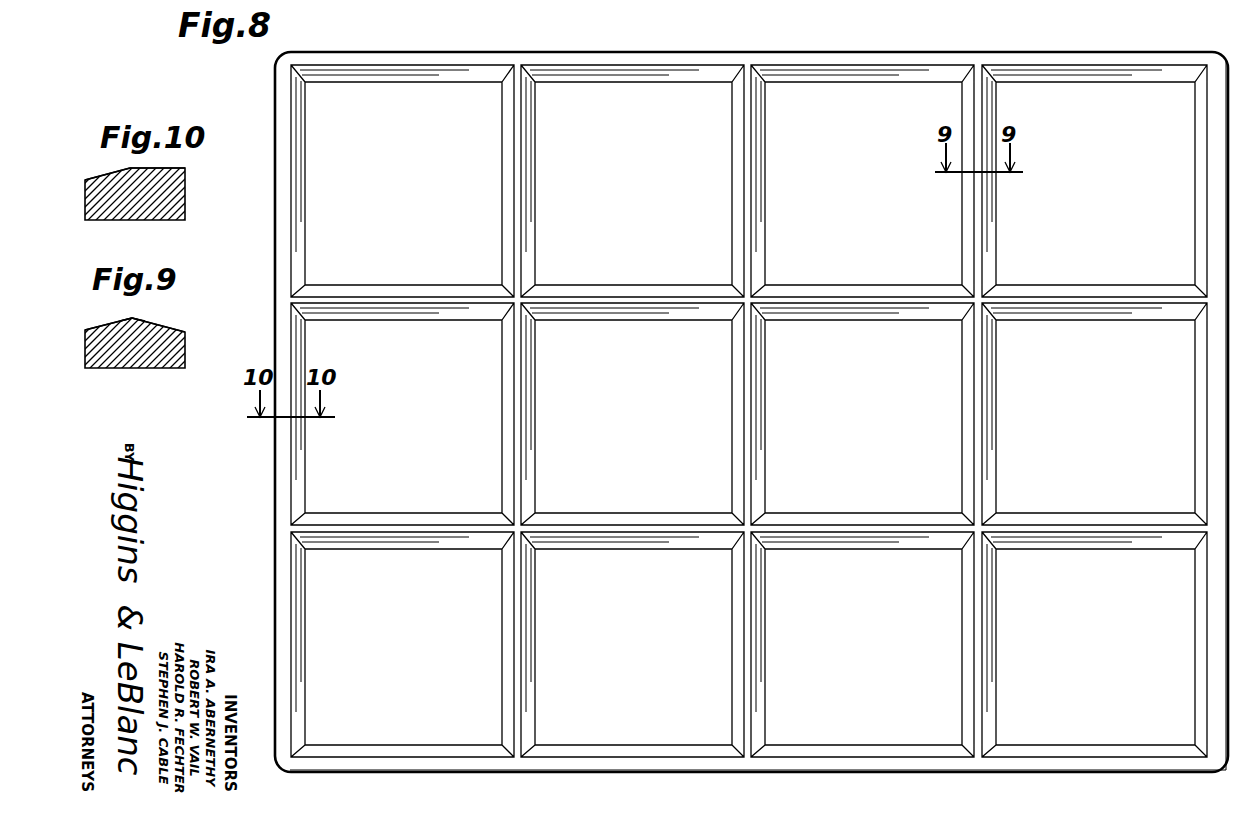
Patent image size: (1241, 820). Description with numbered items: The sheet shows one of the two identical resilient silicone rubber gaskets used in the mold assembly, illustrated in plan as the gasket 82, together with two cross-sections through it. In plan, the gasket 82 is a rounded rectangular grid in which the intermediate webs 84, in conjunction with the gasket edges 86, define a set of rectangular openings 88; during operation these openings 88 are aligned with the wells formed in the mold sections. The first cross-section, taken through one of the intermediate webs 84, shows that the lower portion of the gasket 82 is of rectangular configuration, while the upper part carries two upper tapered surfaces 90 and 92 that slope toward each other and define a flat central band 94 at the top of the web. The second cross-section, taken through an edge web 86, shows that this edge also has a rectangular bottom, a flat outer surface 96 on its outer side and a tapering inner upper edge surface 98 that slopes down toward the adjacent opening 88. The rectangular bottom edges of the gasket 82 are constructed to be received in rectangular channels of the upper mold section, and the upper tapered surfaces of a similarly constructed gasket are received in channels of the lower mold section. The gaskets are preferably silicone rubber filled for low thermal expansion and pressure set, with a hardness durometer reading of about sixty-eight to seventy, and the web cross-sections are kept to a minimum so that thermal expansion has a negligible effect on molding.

In FIG. 8, the gasket 82 is at (803, 60).
In FIG. 8, the intermediate web 84 is at (992, 227).
In FIG. 9, the intermediate web 84 is at (175, 347).
In FIG. 8, the gasket edge 86 is at (633, 62).
In FIG. 10, the gasket edge 86 is at (170, 190).
In FIG. 8, the rectangular opening 88 is at (630, 184).
In FIG. 8, the upper tapered surface 90 is at (994, 403).
In FIG. 9, the upper tapered surface 90 is at (165, 326).
In FIG. 8, the upper tapered surface 92 is at (968, 413).
In FIG. 9, the upper tapered surface 92 is at (105, 325).
In FIG. 8, the flat central band 94 is at (518, 205).
In FIG. 9, the flat central band 94 is at (138, 318).
In FIG. 10, the flat outer surface 96 is at (165, 168).
In FIG. 8, the tapering inner upper edge surface 98 is at (300, 192).
In FIG. 10, the tapering inner upper edge surface 98 is at (105, 177).